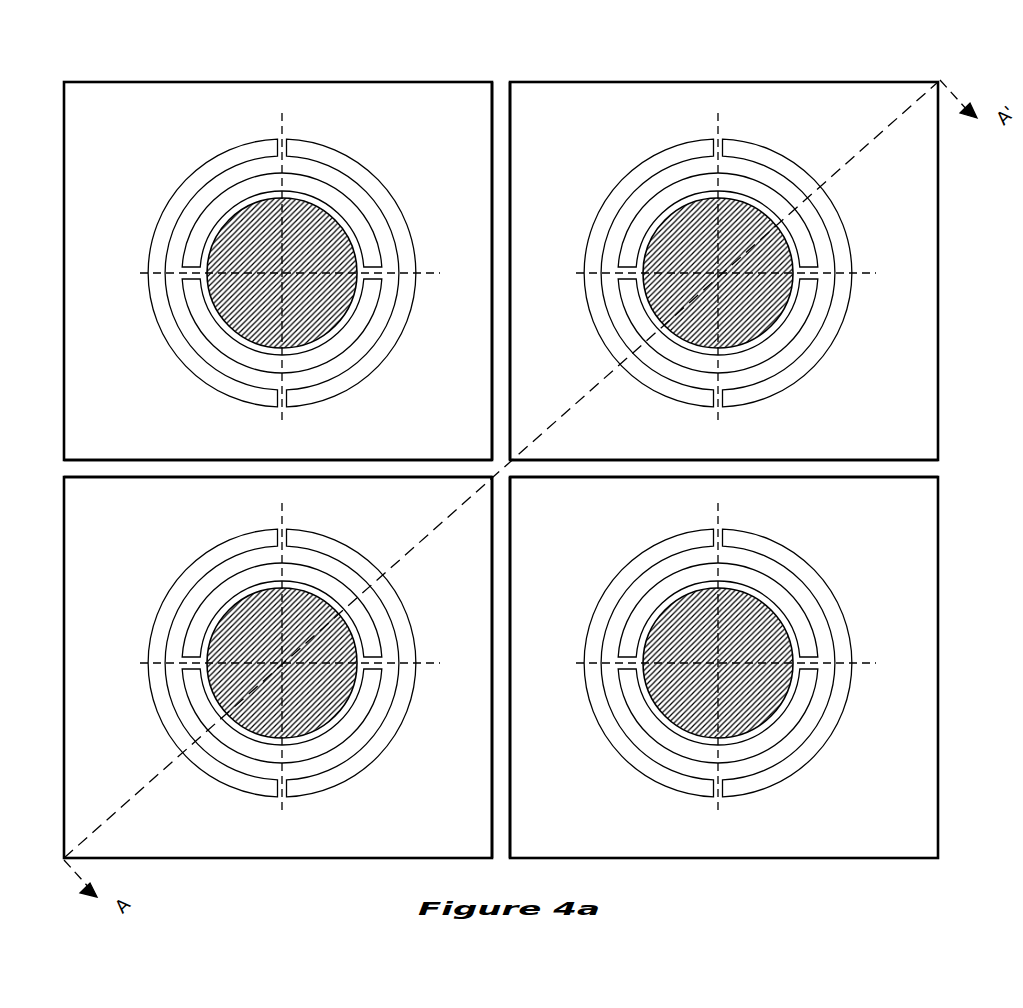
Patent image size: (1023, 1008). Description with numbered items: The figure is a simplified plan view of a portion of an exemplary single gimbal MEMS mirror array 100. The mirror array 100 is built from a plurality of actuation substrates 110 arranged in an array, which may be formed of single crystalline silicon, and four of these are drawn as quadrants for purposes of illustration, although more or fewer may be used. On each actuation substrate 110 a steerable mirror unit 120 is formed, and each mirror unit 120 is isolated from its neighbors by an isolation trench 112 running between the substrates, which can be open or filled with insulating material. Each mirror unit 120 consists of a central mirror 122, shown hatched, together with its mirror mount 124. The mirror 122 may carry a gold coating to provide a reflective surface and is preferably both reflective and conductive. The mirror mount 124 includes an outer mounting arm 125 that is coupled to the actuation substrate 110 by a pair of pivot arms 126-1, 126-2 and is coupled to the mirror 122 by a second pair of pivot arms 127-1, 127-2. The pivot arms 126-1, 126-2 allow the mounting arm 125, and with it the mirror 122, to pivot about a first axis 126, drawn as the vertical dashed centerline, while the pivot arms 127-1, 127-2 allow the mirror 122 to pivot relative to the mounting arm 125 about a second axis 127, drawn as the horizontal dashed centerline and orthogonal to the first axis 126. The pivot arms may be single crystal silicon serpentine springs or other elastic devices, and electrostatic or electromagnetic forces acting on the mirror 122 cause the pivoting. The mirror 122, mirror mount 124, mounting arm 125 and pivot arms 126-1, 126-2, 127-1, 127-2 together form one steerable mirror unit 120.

The mirror array 100 is at (474, 459).
The actuation substrate 110 is at (501, 470).
The isolation trench 112 is at (502, 114).
The mirror unit 120 is at (499, 467).
The mirror 122 is at (535, 443).
The mirror mount 124 is at (499, 468).
The mounting arm 125 is at (525, 467).
The first axis 126 is at (501, 467).
The pivot arm 126-1 is at (569, 456).
The pivot arm 126-2 is at (430, 485).
The second axis 127 is at (505, 467).
The pivot arm 127-1 is at (551, 521).
The pivot arm 127-2 is at (448, 442).